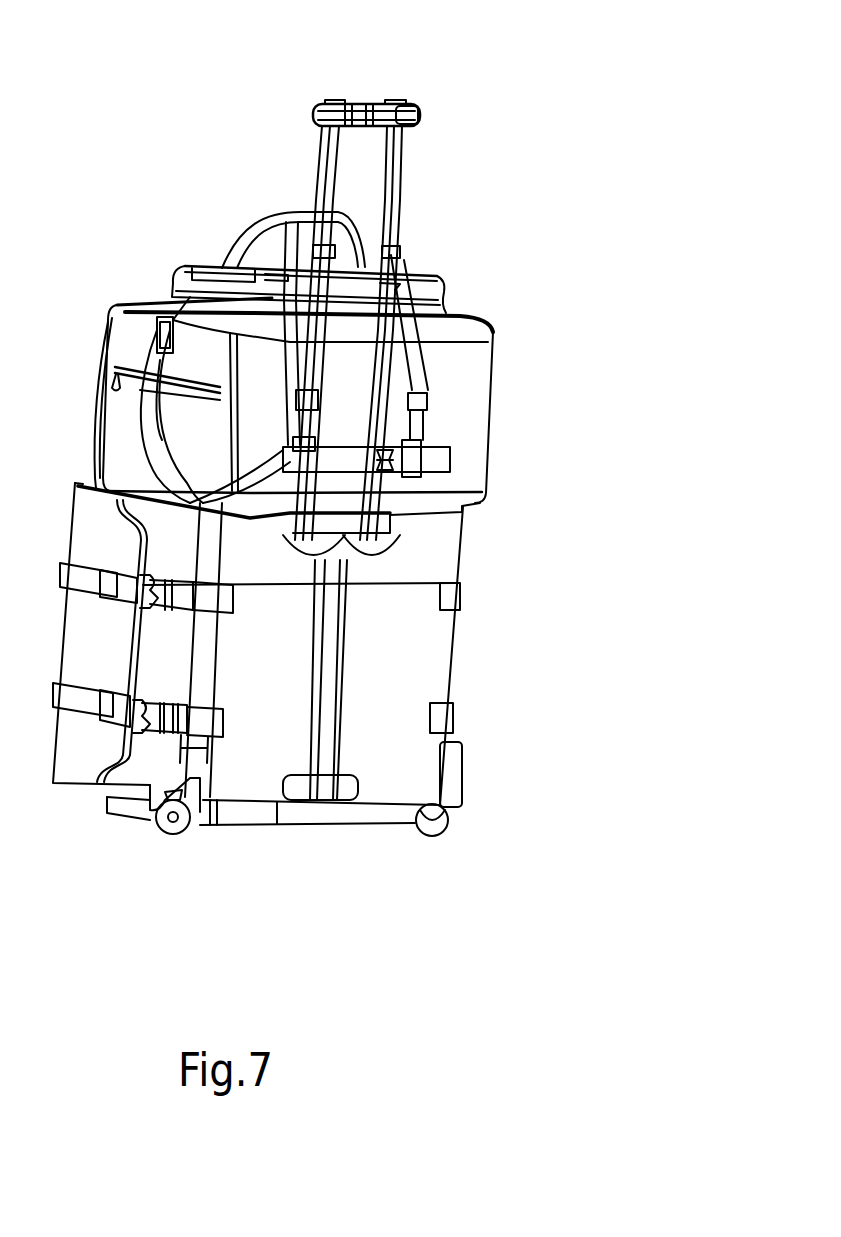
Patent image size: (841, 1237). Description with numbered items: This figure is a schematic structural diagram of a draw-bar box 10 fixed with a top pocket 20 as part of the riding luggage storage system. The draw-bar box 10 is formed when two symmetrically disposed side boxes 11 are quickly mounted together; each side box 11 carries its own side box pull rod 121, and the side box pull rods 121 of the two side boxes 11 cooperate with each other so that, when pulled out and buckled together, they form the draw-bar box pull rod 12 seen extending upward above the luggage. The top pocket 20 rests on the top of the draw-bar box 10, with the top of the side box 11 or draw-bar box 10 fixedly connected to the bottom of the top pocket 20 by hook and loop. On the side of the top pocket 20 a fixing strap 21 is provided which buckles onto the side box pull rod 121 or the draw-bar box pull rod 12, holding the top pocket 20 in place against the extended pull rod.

The draw-bar box 10 is at (355, 659).
The side box 11 is at (413, 660).
The draw-bar box pull rod 12 is at (413, 100).
The side box pull rod 121 is at (407, 113).
The top pocket 20 is at (468, 400).
The fixing strap 21 is at (337, 453).